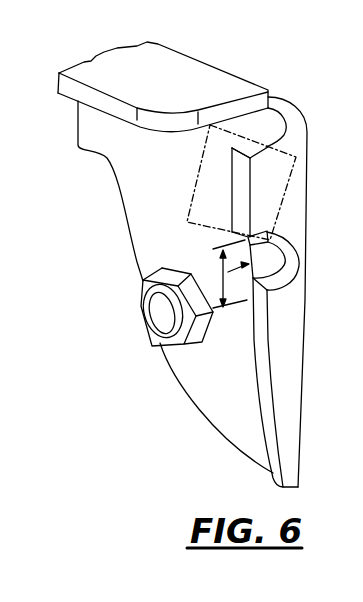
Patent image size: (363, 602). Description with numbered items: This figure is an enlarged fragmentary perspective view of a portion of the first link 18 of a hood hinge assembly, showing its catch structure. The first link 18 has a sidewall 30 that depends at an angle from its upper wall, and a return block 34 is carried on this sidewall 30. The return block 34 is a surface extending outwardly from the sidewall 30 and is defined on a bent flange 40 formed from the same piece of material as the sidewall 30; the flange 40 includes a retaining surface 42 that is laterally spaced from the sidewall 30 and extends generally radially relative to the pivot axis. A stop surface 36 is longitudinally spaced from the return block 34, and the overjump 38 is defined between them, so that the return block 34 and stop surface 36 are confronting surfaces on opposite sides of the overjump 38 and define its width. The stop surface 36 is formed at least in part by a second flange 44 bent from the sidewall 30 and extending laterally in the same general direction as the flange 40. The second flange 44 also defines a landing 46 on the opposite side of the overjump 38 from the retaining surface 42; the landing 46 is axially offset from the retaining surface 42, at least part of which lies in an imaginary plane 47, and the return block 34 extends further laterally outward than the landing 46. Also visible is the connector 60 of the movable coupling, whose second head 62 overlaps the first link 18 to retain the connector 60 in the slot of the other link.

The first link 18 is at (124, 198).
The sidewall 30 is at (190, 372).
The return block 34 is at (297, 220).
The stop surface 36 is at (287, 275).
The overjump 38 is at (300, 246).
The flange 40 is at (275, 182).
The retaining surface 42 is at (243, 187).
The second flange 44 is at (282, 372).
The landing 46 is at (265, 388).
The imaginary plane 47 is at (203, 156).
The connector 60 is at (158, 317).
The second head 62 is at (145, 288).